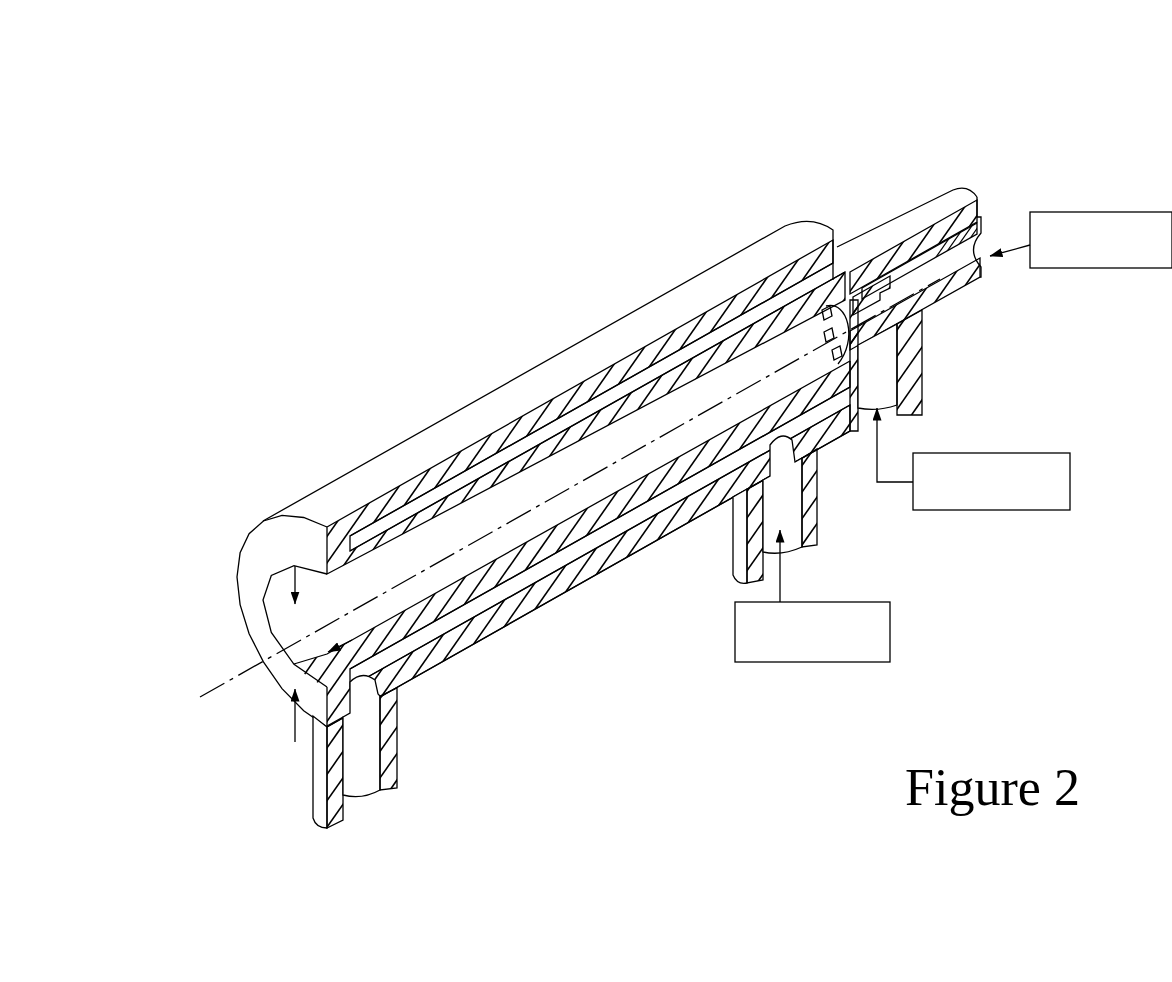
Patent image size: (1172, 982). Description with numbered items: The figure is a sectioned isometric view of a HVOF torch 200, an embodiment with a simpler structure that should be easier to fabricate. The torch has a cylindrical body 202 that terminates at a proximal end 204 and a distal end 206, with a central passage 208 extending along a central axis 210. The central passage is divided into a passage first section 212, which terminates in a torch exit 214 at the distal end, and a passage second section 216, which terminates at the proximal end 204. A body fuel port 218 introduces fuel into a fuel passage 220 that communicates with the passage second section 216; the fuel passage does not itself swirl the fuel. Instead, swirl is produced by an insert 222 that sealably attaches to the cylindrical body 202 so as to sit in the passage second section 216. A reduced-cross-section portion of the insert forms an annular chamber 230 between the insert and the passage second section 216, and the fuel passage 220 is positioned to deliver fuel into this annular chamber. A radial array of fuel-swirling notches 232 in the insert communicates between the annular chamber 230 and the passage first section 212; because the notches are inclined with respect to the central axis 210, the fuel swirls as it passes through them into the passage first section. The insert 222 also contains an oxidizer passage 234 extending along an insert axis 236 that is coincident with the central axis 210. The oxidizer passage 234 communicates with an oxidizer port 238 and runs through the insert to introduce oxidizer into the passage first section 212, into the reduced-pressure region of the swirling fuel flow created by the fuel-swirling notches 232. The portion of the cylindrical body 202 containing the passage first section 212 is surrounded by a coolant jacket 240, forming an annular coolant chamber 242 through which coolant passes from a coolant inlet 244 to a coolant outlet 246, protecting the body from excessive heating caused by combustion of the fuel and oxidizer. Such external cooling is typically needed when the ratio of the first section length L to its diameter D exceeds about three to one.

The HVOF torch 200 is at (640, 481).
The cylindrical body 202 is at (851, 230).
The proximal end 204 is at (960, 190).
The distal end 206 is at (278, 590).
The central passage 208 is at (713, 372).
The central axis 210 is at (214, 682).
The passage first section 212 is at (672, 446).
The torch exit 214 is at (295, 632).
The passage second section 216 is at (876, 280).
The body fuel port 218 is at (887, 402).
The fuel passage 220 is at (890, 360).
The insert 222 is at (992, 284).
The annular chamber 230 is at (640, 481).
The fuel-swirling notches 232 is at (838, 358).
The oxidizer passage 234 is at (930, 287).
The insert axis 236 is at (988, 247).
The oxidizer port 238 is at (973, 247).
The coolant jacket 240 is at (538, 619).
The annular coolant chamber 242 is at (431, 636).
The coolant inlet 244 is at (789, 517).
The coolant outlet 246 is at (363, 755).